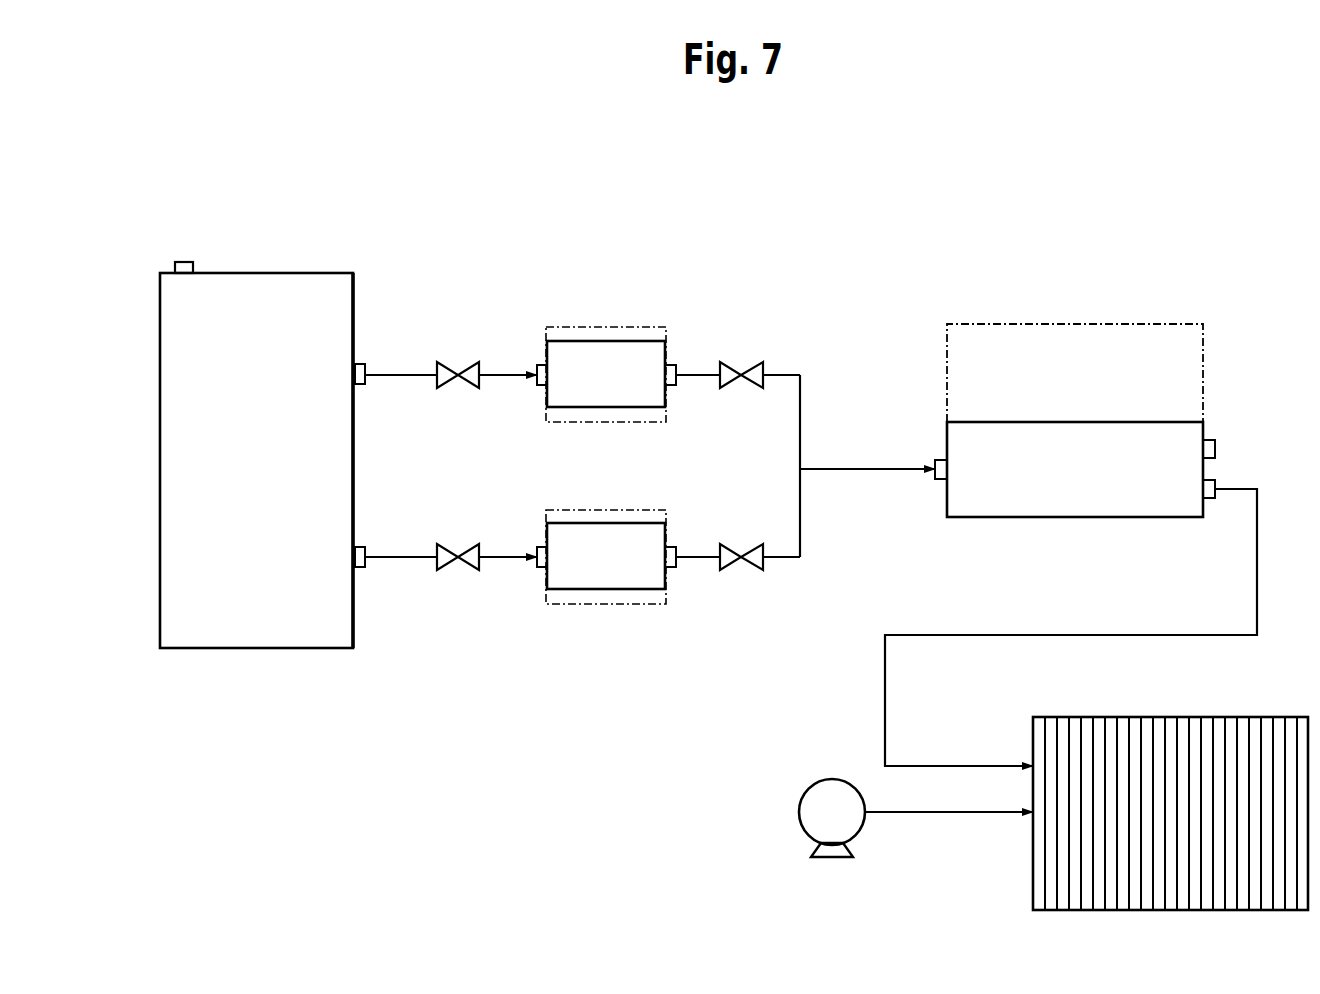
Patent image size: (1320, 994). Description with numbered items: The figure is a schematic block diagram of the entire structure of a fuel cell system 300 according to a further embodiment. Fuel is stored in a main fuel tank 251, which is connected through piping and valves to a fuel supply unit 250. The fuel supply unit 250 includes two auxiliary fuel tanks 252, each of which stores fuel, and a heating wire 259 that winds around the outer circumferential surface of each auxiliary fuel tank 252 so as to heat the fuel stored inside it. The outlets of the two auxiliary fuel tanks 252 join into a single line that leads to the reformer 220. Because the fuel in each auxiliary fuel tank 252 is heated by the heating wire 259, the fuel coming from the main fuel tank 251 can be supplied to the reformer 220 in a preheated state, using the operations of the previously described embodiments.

The fuel cell system 300 is at (744, 152).
The fuel supply unit 250 is at (468, 247).
The main fuel tank 251 is at (273, 256).
The heating wire 259 is at (580, 326).
The auxiliary fuel tank 252 is at (645, 341).
The reformer 220 is at (1085, 518).